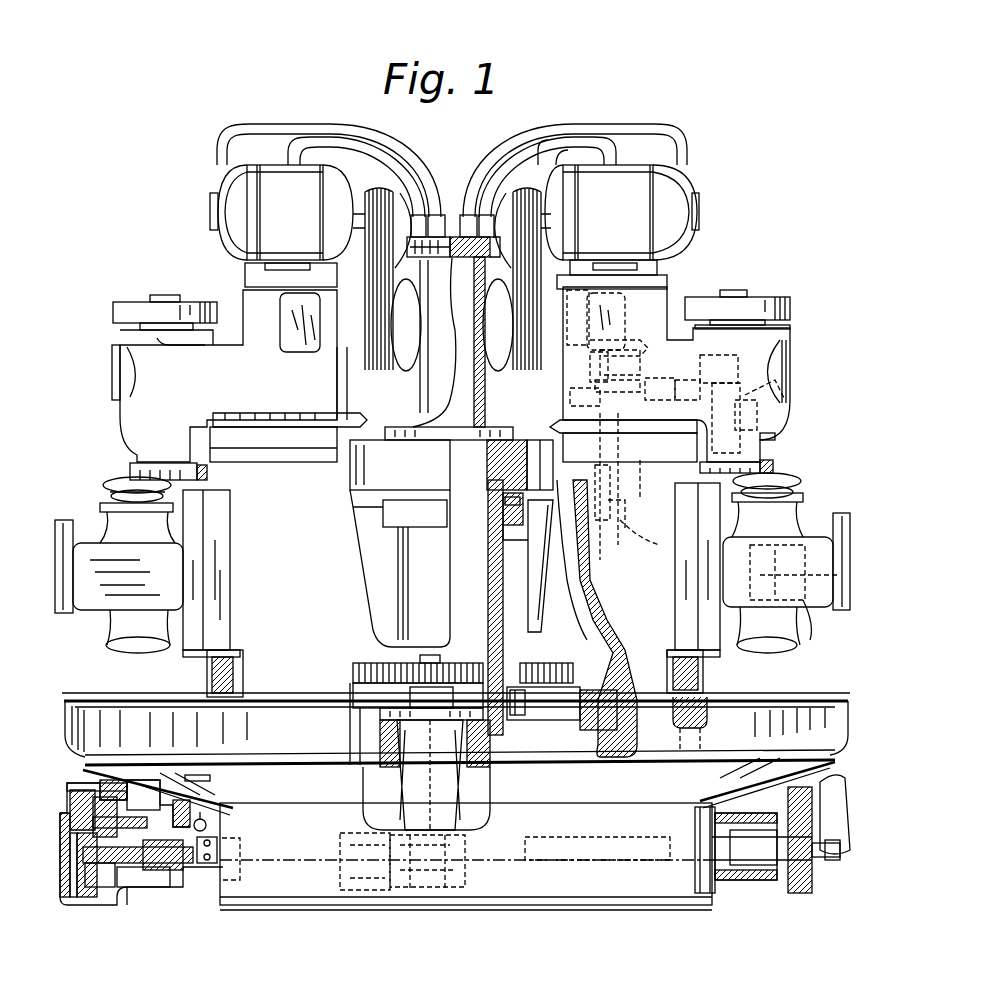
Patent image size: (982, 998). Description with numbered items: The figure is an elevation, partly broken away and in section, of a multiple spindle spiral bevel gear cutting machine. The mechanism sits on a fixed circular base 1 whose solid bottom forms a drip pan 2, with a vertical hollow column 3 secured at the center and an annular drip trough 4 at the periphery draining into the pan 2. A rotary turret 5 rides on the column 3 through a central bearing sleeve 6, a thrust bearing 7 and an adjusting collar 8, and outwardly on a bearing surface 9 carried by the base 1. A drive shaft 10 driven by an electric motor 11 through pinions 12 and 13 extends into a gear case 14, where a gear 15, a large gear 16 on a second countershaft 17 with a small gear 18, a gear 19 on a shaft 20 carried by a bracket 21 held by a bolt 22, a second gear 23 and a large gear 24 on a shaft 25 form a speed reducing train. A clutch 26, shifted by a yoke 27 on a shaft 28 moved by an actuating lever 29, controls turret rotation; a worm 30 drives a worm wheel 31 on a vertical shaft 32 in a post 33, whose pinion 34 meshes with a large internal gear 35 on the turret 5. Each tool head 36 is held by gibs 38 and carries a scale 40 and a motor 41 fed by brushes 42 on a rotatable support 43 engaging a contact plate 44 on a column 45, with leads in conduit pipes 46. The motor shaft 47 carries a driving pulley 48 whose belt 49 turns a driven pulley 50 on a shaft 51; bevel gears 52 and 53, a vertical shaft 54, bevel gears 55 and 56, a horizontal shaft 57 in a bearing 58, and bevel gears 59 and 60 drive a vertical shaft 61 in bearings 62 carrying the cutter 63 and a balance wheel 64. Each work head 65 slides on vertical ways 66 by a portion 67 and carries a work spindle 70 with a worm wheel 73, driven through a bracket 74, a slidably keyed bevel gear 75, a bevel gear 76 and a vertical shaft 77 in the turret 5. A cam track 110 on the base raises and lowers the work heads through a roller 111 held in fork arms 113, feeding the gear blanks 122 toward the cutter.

The circular base 1 is at (720, 796).
The drip pan 2 is at (617, 742).
The vertical hollow column 3 is at (503, 600).
The annular drip trough 4 is at (817, 748).
The rotary turret 5 is at (540, 578).
The central bearing sleeve 6 is at (522, 499).
The thrust bearing 7 is at (523, 512).
The adjusting collar 8 is at (505, 530).
The bearing surface 9 is at (580, 711).
The drive shaft 10 is at (596, 835).
The electric motor 11 is at (845, 852).
The pinion 12 is at (788, 802).
The pinion 13 is at (790, 888).
The gear case 14 is at (125, 905).
The gear 15 is at (160, 870).
The large gear 16 is at (144, 795).
The second countershaft 17 is at (185, 796).
The small gear 18 is at (100, 806).
The gear 19 is at (116, 905).
The shaft 20 is at (77, 848).
The bracket 21 is at (100, 784).
The bolt 22 is at (88, 790).
The second gear 23 is at (72, 808).
The large gear 24 is at (66, 897).
The shaft 25 is at (250, 875).
The clutch 26 is at (175, 870).
The shifting yoke 27 is at (210, 865).
The shaft 28 is at (207, 826).
The actuating lever 29 is at (200, 781).
The worm 30 is at (415, 893).
The worm wheel 31 is at (380, 895).
The vertical shaft 32 is at (470, 792).
The post 33 is at (405, 790).
The pinion 34 is at (450, 660).
The large internal gear 35 is at (390, 685).
The tool head 36 is at (806, 409).
The gibs 38 is at (283, 462).
The scale 40 is at (272, 427).
The motor 41 is at (218, 185).
The brushes 42 is at (470, 257).
The rotatable support 43 is at (490, 258).
The contact plate 44 is at (455, 257).
The column 45 is at (486, 400).
The conduit pipes 46 is at (222, 146).
The motor shaft 47 is at (562, 160).
The driving pulley 48 is at (546, 152).
The belt 49 is at (375, 370).
The driven pulley 50 is at (402, 370).
The rotatable shaft 51 is at (579, 313).
The bevel gear 52 is at (606, 318).
The bevel gear 53 is at (626, 339).
The vertical shaft 54 is at (628, 358).
The bevel gear 55 is at (591, 364).
The bevel gear 56 is at (660, 380).
The horizontally extending shaft 57 is at (716, 383).
The bearing 58 is at (685, 379).
The bevel gear 59 is at (724, 418).
The bevel gear 60 is at (765, 396).
The vertically extending shaft 61 is at (740, 427).
The bearings 62 is at (790, 340).
The cutter 63 is at (207, 472).
The balance wheel 64 is at (113, 309).
The work head 65 is at (110, 520).
The vertical ways 66 is at (230, 596).
The portion 67 is at (190, 648).
The work spindle 70 is at (778, 538).
The worm wheel 73 is at (810, 628).
The bracket 74 is at (570, 392).
The bevel gear 75 is at (605, 377).
The bevel gear 76 is at (624, 427).
The vertically extending shaft 77 is at (600, 475).
The cam track 110 is at (705, 697).
The roller 111 is at (243, 676).
The arms 113 is at (205, 672).
The gear blanks 122 is at (105, 484).